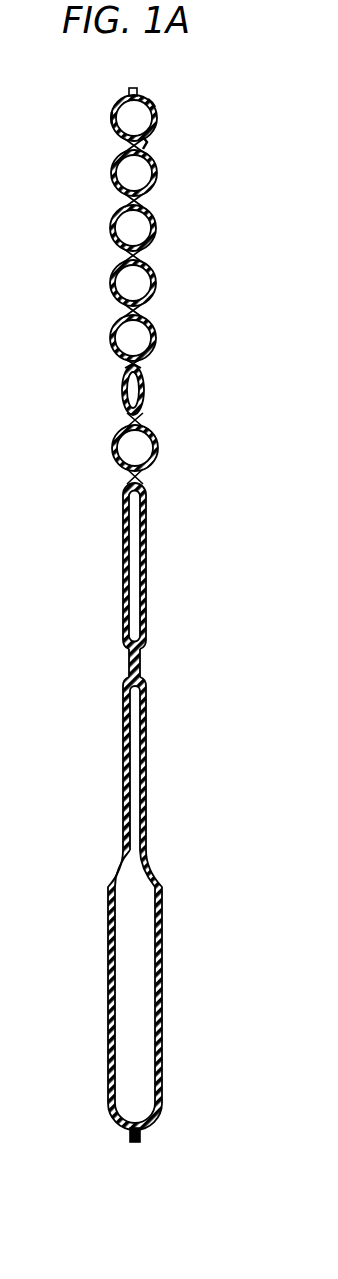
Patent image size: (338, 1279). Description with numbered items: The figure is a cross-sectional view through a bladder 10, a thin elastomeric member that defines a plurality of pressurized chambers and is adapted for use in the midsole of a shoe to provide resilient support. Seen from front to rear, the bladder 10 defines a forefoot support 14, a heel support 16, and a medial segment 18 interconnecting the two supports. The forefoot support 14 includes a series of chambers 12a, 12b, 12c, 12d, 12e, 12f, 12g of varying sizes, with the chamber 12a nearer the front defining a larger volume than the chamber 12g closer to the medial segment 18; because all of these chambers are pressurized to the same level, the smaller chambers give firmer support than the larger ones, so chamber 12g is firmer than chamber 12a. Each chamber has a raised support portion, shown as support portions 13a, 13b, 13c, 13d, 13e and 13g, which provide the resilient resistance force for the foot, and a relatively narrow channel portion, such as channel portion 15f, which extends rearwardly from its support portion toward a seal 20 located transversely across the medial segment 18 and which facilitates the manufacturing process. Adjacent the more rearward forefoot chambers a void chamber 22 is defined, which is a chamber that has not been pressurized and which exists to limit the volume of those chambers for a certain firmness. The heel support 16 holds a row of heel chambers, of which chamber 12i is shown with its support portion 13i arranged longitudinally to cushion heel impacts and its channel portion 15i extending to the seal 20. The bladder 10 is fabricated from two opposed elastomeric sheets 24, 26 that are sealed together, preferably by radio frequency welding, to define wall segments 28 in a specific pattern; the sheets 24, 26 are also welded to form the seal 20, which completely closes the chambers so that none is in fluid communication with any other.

The bladder 10 is at (214, 332).
The chamber 12a is at (117, 93).
The chamber 12b is at (112, 163).
The chamber 12c is at (112, 212).
The chamber 12d is at (113, 262).
The chamber 12e is at (112, 340).
The chamber 12f is at (145, 523).
The chamber 12g is at (114, 443).
The chamber 12i is at (147, 780).
The support portion 13a is at (143, 119).
The support portion 13b is at (140, 175).
The support portion 13c is at (138, 235).
The support portion 13d is at (137, 283).
The support portion 13e is at (142, 335).
The support portion 13g is at (142, 448).
The support portion 13i is at (137, 1018).
The forefoot support 14 is at (96, 303).
The channel portion 15f is at (137, 582).
The channel portion 15i is at (138, 752).
The heel support 16 is at (179, 953).
The medial segment 18 is at (103, 603).
The seal 20 is at (140, 658).
The void chamber 22 is at (122, 392).
The elastomeric sheet 24 is at (158, 100).
The elastomeric sheet 26 is at (108, 118).
The wall segment 28 is at (149, 142).